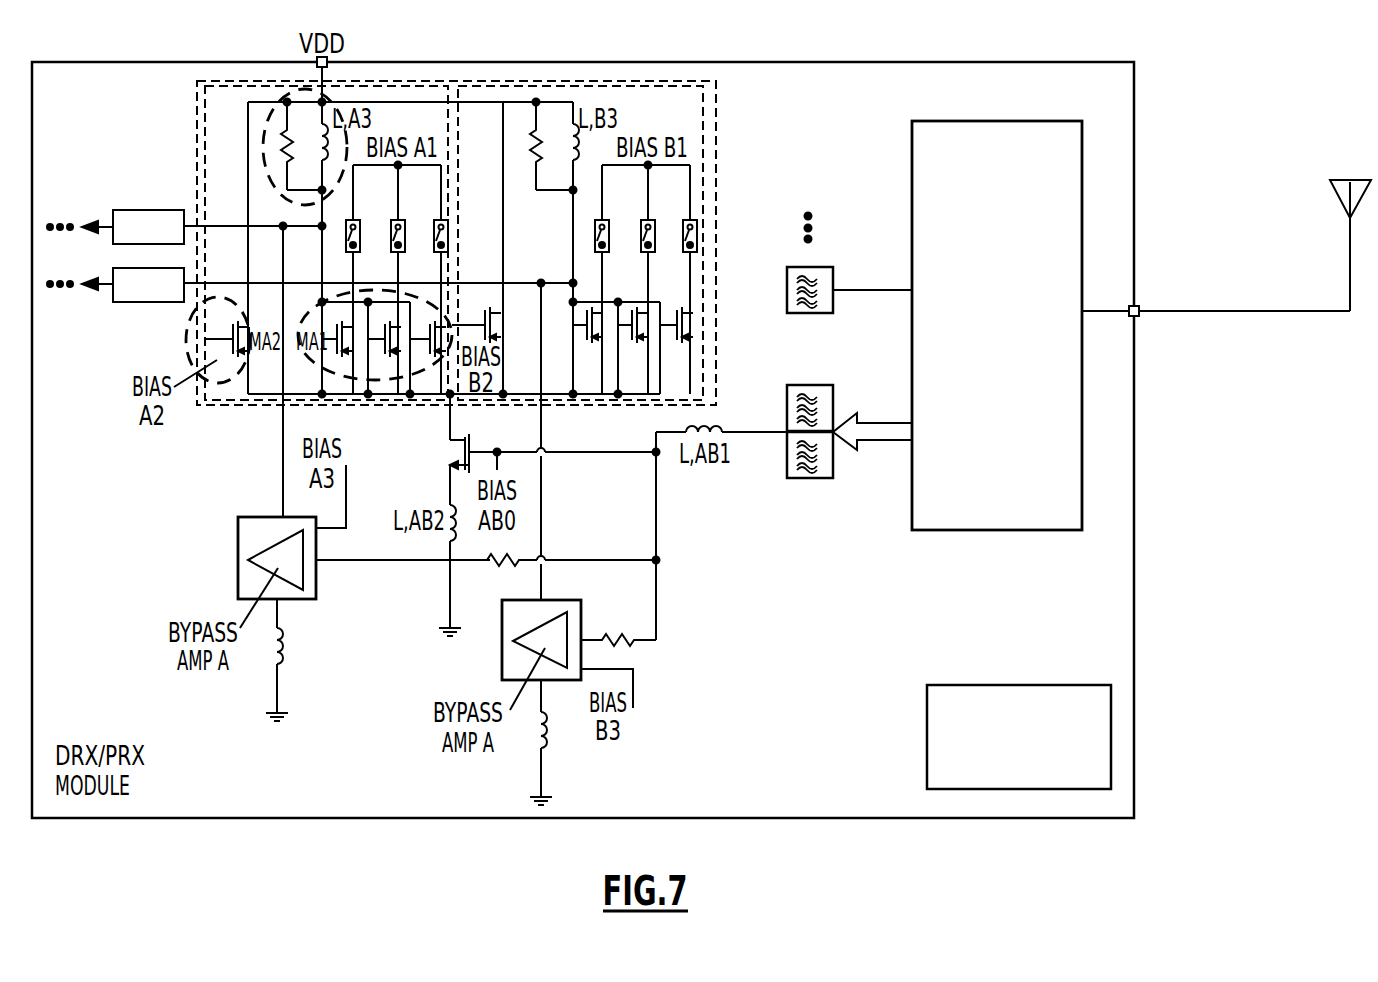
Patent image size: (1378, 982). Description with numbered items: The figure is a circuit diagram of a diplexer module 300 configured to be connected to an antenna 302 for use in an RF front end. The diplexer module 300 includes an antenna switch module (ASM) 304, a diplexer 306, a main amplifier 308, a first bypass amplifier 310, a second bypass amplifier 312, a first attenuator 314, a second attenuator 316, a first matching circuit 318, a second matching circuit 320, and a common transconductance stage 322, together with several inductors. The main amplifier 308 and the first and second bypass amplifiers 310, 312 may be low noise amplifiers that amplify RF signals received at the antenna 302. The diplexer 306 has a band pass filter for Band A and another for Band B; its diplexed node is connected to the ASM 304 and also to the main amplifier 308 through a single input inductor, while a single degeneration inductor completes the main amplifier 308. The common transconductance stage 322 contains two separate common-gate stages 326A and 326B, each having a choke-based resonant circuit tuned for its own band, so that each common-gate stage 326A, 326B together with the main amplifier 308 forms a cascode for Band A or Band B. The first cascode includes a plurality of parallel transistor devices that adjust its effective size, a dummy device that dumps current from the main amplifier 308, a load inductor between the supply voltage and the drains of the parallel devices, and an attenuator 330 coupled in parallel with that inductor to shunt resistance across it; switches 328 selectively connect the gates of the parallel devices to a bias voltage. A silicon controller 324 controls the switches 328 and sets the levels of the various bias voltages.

The diplexer module 300 is at (802, 62).
The antenna 302 is at (1336, 180).
The antenna switch module (ASM) 304 is at (975, 366).
The diplexer 306 is at (834, 396).
The main amplifier 308 is at (462, 434).
The first bypass amplifier 310 is at (252, 517).
The second bypass amplifier 312 is at (559, 600).
The first attenuator 314 is at (510, 560).
The second attenuator 316 is at (631, 646).
The first matching circuit 318 is at (155, 210).
The second matching circuit 320 is at (155, 302).
The common transconductance stage 322 is at (527, 80).
The silicon (Si) controller 324 is at (997, 784).
The first common-gate stage 326A is at (197, 118).
The second common-gate stage 326B is at (716, 143).
The switches 328 is at (437, 217).
The attenuator 330 is at (268, 136).